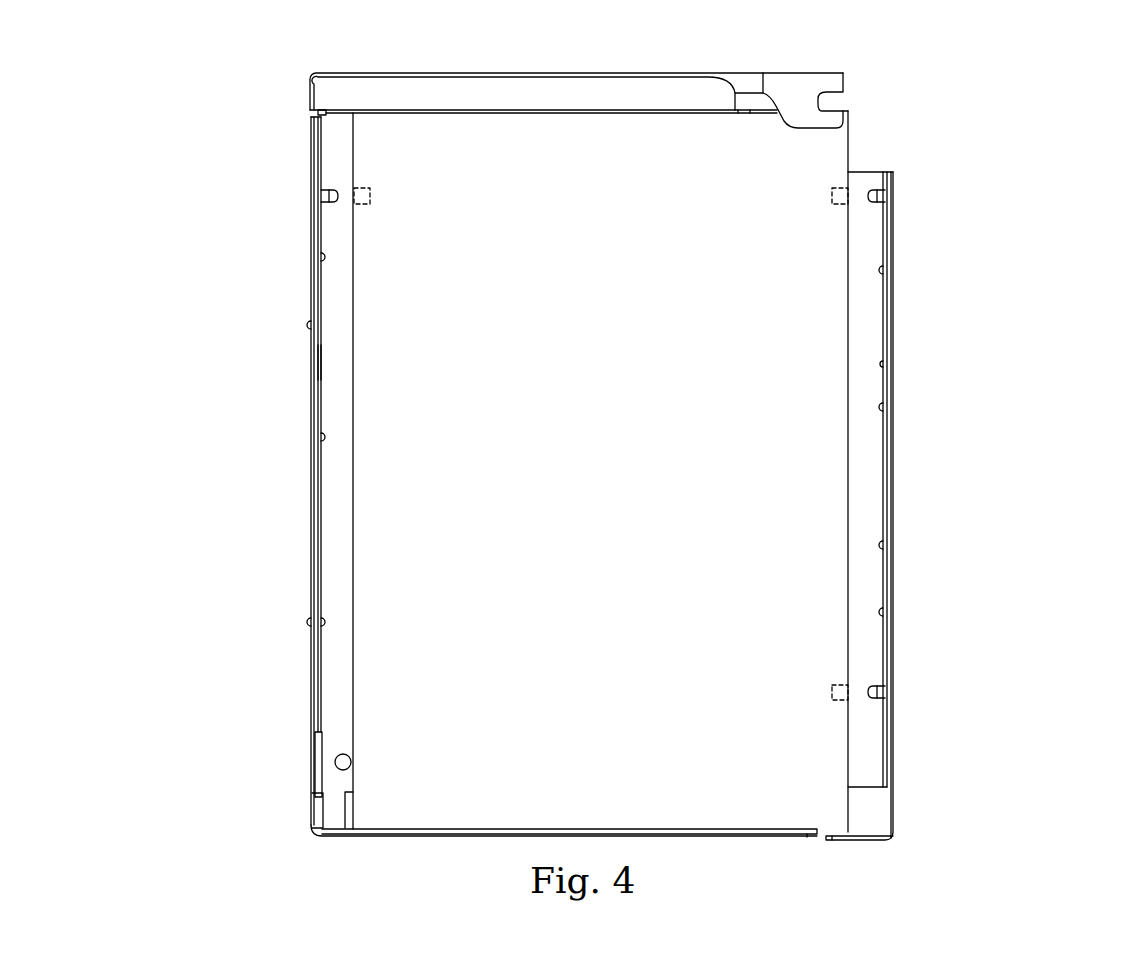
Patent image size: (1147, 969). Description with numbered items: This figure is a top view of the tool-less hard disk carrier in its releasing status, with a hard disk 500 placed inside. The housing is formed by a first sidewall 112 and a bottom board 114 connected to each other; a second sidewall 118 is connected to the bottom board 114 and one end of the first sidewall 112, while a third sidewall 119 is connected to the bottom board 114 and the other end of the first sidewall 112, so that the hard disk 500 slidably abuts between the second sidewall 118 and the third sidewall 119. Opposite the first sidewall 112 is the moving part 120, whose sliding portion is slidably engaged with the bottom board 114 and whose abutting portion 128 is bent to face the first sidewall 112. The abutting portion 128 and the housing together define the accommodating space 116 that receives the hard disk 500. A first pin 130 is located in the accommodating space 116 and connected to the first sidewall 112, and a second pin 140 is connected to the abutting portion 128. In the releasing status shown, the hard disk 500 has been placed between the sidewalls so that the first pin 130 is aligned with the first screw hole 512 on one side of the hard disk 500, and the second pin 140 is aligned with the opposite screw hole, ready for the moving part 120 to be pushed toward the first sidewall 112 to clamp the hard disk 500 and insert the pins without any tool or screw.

The first sidewall 112 is at (311, 480).
The bottom board 114 is at (337, 300).
The accommodating space 116 is at (453, 158).
The second sidewall 118 is at (530, 92).
The third sidewall 119 is at (745, 837).
The moving part 120 is at (893, 302).
The abutting portion 128 is at (893, 482).
The first pin 130 is at (321, 196).
The second pin 140 is at (886, 196).
The hard disk 500 is at (783, 165).
The first screw hole 512 is at (356, 196).